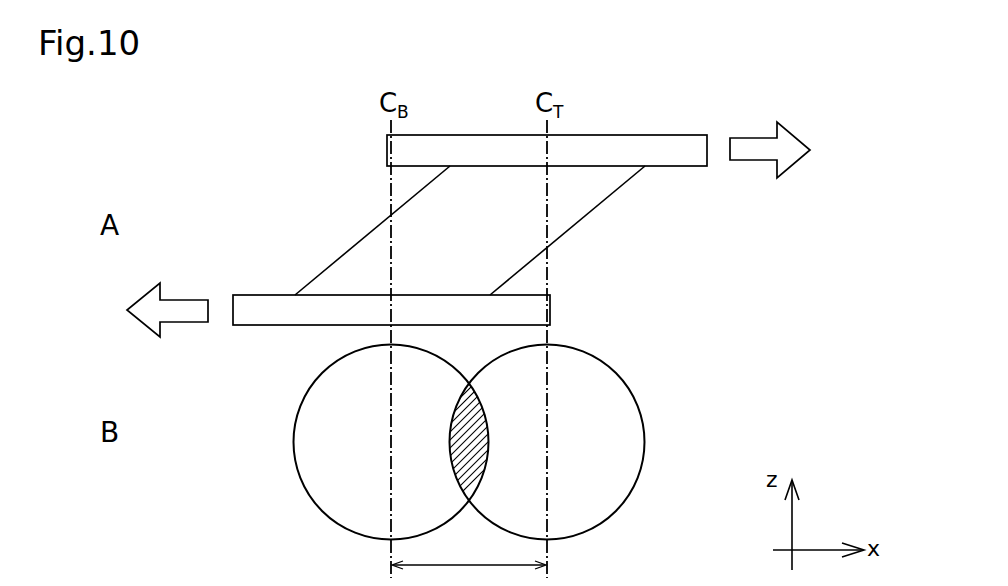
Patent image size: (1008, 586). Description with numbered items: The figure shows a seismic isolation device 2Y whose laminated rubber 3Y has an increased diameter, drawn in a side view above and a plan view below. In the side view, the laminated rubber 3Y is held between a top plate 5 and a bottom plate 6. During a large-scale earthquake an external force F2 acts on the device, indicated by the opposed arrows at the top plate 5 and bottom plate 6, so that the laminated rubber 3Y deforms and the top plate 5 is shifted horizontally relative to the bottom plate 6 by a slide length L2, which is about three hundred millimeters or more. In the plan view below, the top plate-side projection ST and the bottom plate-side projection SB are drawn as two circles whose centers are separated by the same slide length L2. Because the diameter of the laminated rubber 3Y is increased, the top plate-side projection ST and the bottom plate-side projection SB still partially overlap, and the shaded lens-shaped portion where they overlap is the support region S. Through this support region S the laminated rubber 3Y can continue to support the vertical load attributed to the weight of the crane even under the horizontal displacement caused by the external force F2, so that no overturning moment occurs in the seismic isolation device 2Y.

The seismic isolation device 2Y is at (234, 150).
The laminated rubber 3Y is at (363, 247).
The top plate 5 is at (678, 157).
The bottom plate 6 is at (257, 302).
The external force F2 is at (757, 143).
The bottom plate-side projection SB is at (312, 428).
The top plate-side projection ST is at (630, 425).
The support region S is at (473, 408).
The slide length L2 is at (469, 553).